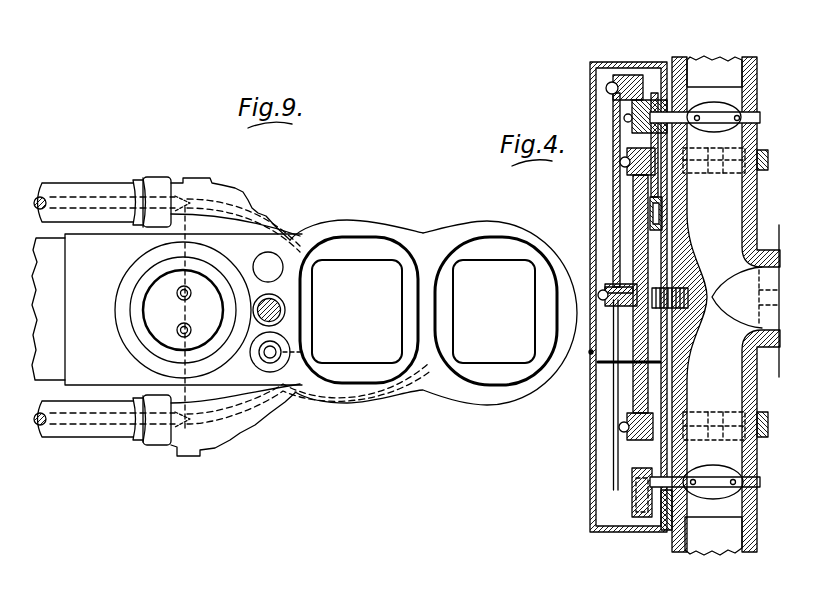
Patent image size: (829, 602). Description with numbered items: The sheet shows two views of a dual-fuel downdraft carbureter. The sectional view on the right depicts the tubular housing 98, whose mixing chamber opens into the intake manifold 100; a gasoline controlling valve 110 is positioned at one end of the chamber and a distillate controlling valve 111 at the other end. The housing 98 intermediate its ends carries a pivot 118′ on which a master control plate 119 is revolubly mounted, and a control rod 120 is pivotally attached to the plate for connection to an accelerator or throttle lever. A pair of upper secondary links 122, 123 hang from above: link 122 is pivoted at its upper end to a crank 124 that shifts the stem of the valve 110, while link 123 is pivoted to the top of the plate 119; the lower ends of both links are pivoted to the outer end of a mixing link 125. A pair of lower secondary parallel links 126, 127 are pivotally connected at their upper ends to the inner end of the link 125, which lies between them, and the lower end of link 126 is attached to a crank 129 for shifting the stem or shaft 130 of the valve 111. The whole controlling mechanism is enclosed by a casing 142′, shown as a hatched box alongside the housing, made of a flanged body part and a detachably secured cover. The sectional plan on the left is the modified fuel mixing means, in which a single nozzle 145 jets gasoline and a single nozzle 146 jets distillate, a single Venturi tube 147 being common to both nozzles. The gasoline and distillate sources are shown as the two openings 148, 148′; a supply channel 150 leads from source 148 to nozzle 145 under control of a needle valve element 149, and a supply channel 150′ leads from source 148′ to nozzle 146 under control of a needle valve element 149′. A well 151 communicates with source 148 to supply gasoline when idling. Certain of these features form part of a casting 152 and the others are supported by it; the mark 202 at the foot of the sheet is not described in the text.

In FIG. 9, the needle valve element 149 is at (176, 182).
In FIG. 9, the casting 152 is at (316, 212).
In FIG. 9, the supply channel 150 is at (262, 227).
In FIG. 9, the gasoline source 148 is at (348, 237).
In FIG. 9, the distillate source 148′ is at (470, 237).
In FIG. 9, the Venturi tube 147 is at (148, 287).
In FIG. 9, the nozzle 145 is at (176, 298).
In FIG. 9, the nozzle 146 is at (176, 333).
In FIG. 9, the well 151 is at (282, 340).
In FIG. 9, the supply channel 150′ is at (348, 398).
In FIG. 9, the needle valve element 149′ is at (180, 447).
In FIG. 9, the sheet mark 202 is at (256, 601).
In FIG. 4, the sheet mark 202 is at (604, 598).
In FIG. 4, the casing 142′ is at (630, 535).
In FIG. 4, the crank 124 is at (643, 123).
In FIG. 4, the lower secondary link 127 is at (670, 117).
In FIG. 4, the upper secondary link 122 is at (617, 127).
In FIG. 4, the upper secondary link 123 is at (630, 193).
In FIG. 4, the control rod 120 is at (652, 210).
In FIG. 4, the gasoline controlling valve 110 is at (720, 128).
In FIG. 4, the tubular housing 98 is at (756, 200).
In FIG. 4, the pivot 118′ is at (688, 278).
In FIG. 4, the intake manifold 100 is at (770, 277).
In FIG. 4, the master control plate 119 is at (643, 368).
In FIG. 4, the mixing link 125 is at (623, 370).
In FIG. 4, the lower secondary link 126 is at (617, 487).
In FIG. 4, the crank 129 is at (632, 494).
In FIG. 4, the stem or shaft 130 is at (700, 490).
In FIG. 4, the distillate controlling valve 111 is at (727, 495).